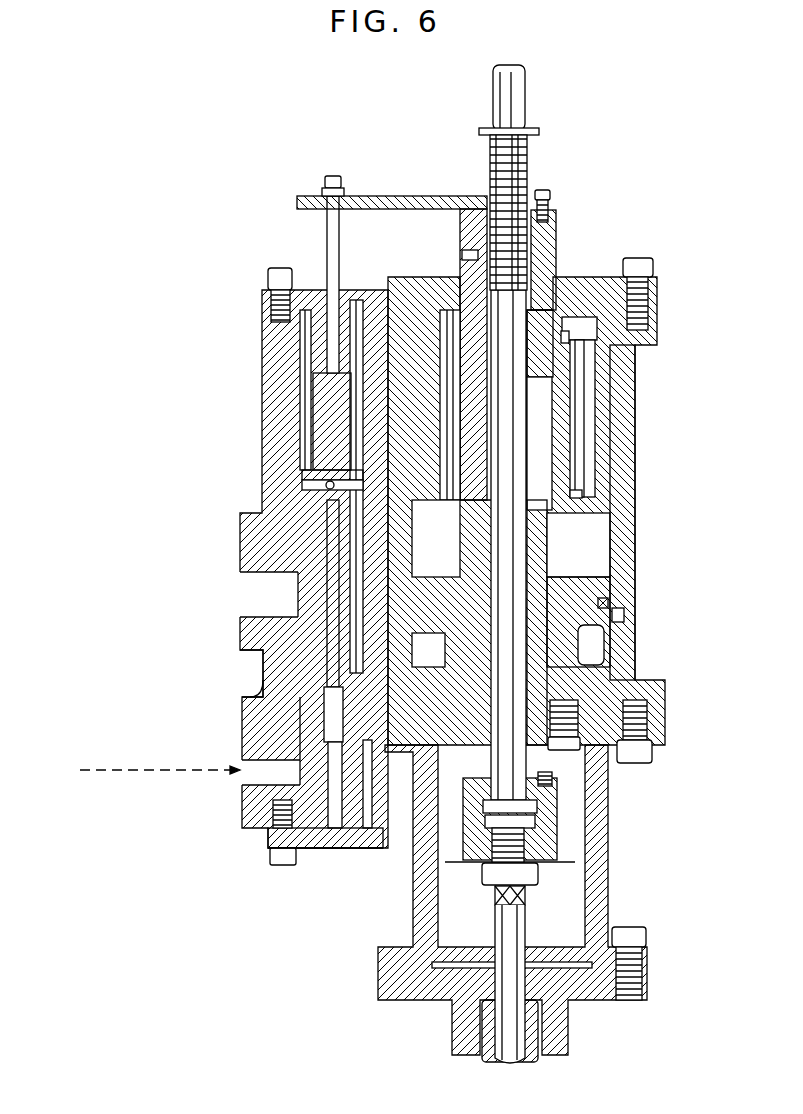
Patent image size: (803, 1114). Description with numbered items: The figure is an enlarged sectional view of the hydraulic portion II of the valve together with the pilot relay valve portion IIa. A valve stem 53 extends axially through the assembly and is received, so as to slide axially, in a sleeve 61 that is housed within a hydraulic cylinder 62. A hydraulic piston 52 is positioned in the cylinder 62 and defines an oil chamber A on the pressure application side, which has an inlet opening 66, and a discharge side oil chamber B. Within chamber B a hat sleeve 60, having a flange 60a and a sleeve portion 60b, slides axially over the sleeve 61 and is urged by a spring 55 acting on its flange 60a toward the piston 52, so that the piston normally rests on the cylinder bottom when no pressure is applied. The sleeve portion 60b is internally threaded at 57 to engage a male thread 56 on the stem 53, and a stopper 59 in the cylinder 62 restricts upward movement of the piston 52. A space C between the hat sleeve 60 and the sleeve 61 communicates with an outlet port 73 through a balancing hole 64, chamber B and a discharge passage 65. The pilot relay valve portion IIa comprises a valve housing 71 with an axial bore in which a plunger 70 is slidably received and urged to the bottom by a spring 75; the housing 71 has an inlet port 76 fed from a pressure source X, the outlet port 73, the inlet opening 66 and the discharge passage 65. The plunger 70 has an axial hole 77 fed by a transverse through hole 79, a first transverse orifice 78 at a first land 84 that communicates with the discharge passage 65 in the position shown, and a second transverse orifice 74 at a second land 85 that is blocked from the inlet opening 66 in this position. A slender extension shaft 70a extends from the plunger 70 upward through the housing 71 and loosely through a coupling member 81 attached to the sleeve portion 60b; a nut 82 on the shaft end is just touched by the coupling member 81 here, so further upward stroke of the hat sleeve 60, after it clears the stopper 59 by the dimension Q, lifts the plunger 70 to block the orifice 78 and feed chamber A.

The hydraulic piston 52 is at (603, 593).
The valve stem 53 is at (560, 278).
The spring 55 is at (583, 432).
The male thread 56 is at (528, 170).
The internal thread 57 is at (553, 222).
The stopper 59 is at (598, 508).
The hat sleeve 60 is at (557, 407).
The flange 60a is at (572, 492).
The sleeve portion 60b is at (462, 254).
The sleeve 61 is at (545, 533).
The hydraulic cylinder 62 is at (622, 616).
The balancing hole 64 is at (455, 386).
The discharge passage 65 is at (370, 532).
The inlet opening 66 is at (377, 647).
The plunger 70 is at (312, 562).
The extension shaft 70a is at (326, 243).
The valve housing 71 is at (265, 320).
The outlet port 73 is at (243, 600).
The second transverse orifice 74 is at (262, 726).
The spring 75 is at (300, 443).
The inlet port 76 is at (241, 775).
The axial hole 77 is at (262, 665).
The first transverse orifice 78 is at (320, 478).
The transverse through hole 79 is at (350, 778).
The coupling member 81 is at (392, 197).
The nut 82 is at (326, 186).
The first land 84 is at (303, 500).
The second land 85 is at (268, 690).
The oil chamber A is at (595, 652).
The oil chamber B is at (430, 418).
The space C is at (537, 441).
The dimension Q is at (560, 337).
The hydraulic portion II is at (637, 563).
The pilot relay valve portion IIa is at (318, 850).
The pressure source X is at (138, 770).